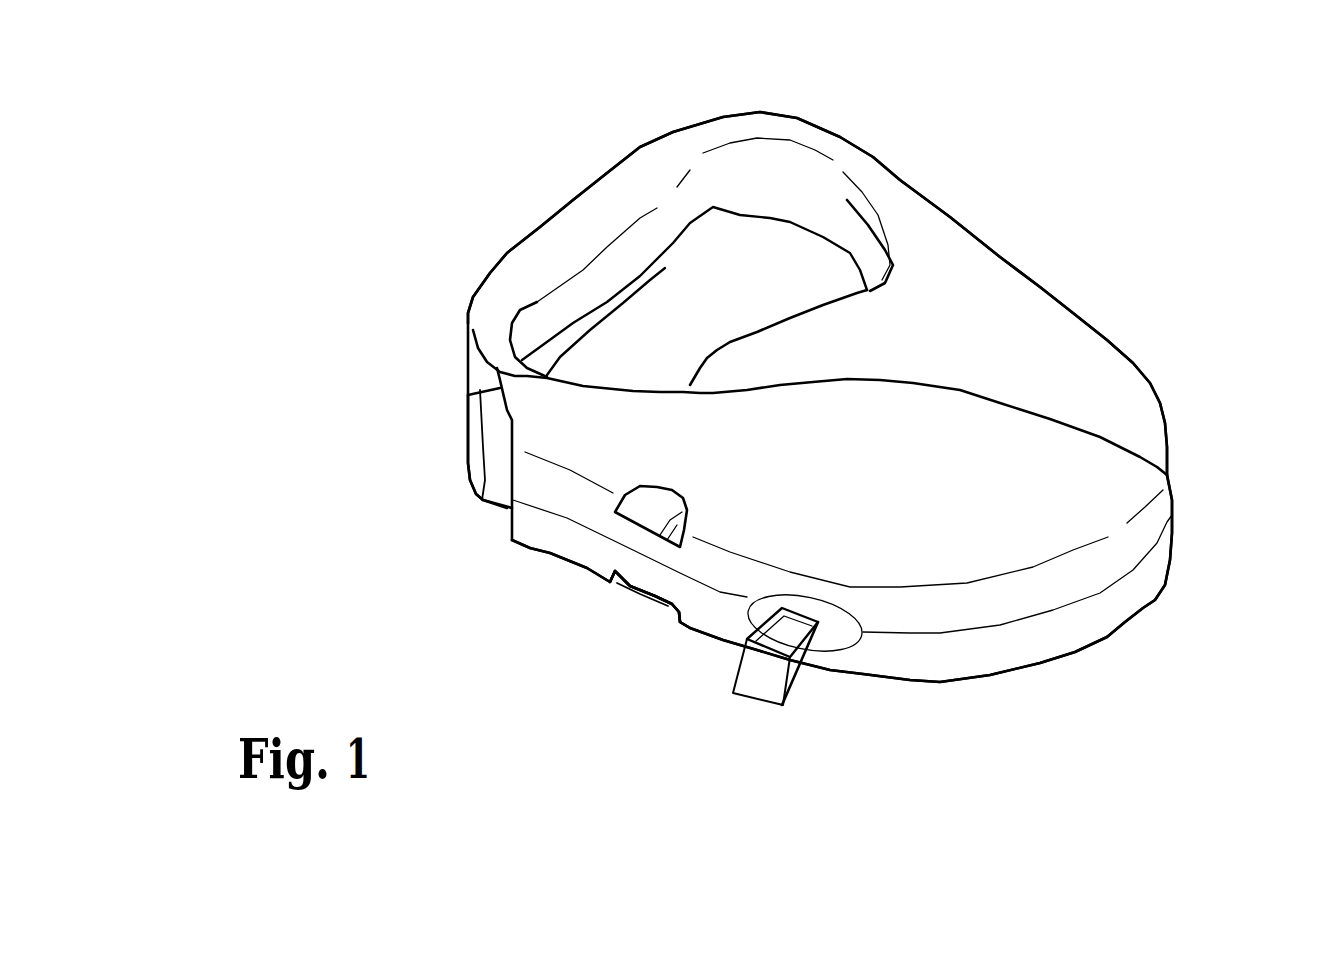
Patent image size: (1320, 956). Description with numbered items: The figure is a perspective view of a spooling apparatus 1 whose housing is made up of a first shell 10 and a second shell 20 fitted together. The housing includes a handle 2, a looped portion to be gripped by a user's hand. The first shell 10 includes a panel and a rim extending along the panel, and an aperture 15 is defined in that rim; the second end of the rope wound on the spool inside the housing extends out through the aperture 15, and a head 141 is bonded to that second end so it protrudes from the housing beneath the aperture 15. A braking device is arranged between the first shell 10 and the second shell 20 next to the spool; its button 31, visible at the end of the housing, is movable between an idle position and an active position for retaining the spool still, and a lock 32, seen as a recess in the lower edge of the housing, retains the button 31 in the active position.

The spooling apparatus 1 is at (915, 124).
The handle 2 is at (648, 170).
The first shell 10 is at (1000, 292).
The second shell 20 is at (1153, 560).
The button 31 is at (478, 466).
The lock 32 is at (650, 603).
The head 141 is at (782, 642).
The aperture 15 is at (813, 622).